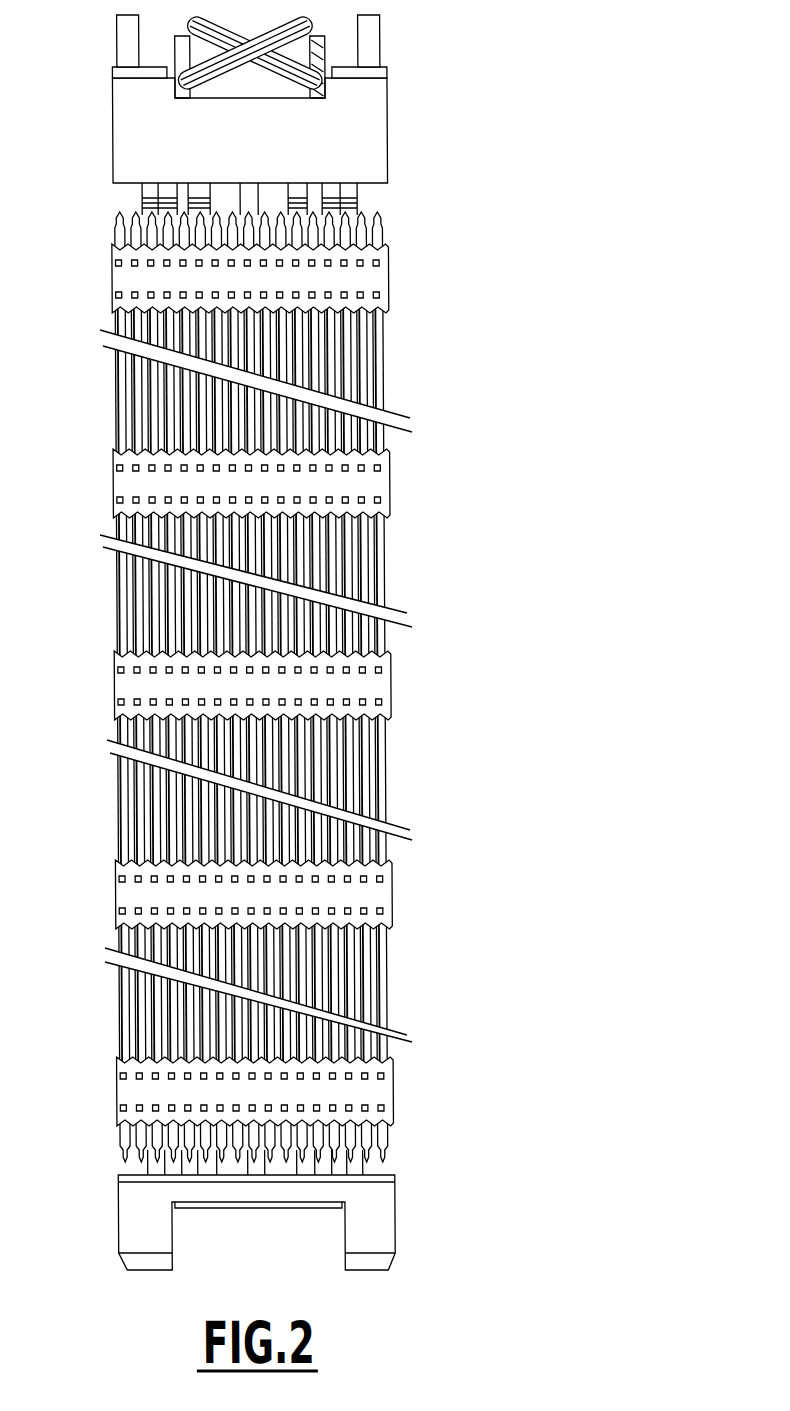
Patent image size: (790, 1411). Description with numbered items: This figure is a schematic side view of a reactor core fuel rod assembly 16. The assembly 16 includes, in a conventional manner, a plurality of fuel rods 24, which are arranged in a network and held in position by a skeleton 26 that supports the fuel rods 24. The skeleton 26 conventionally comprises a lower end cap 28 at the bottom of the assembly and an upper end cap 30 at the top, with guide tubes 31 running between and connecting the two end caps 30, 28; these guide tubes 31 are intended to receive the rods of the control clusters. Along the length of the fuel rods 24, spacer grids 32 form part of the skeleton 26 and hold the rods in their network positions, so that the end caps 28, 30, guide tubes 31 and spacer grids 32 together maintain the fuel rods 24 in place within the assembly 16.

The assembly 16 is at (269, 672).
The fuel rods 24 is at (351, 998).
The skeleton 26 is at (256, 98).
The lower end cap 28 is at (363, 1243).
The upper end cap 30 is at (129, 150).
The guide tubes 31 is at (151, 1168).
The spacer grids 32 is at (110, 683).